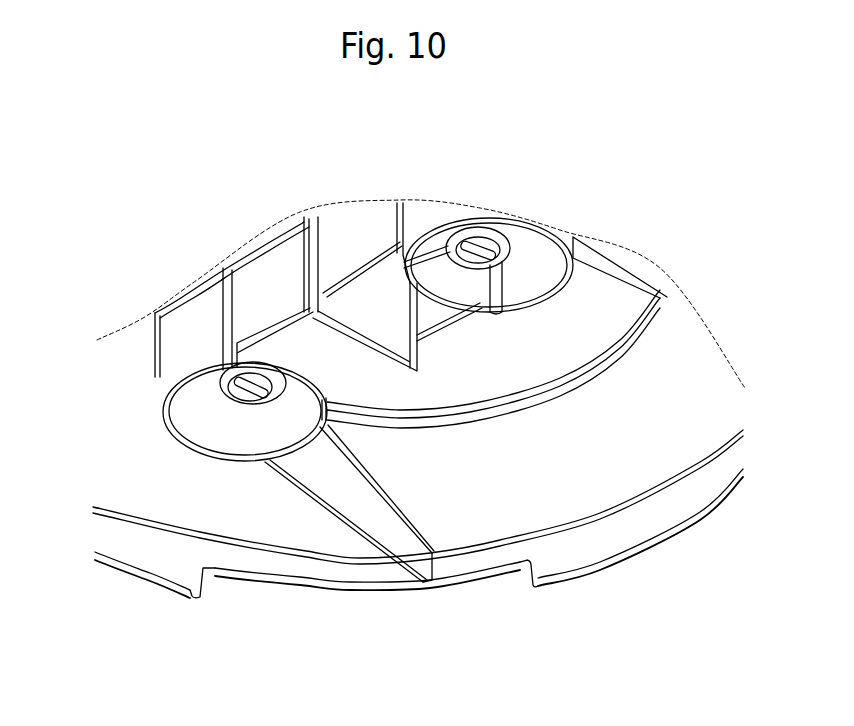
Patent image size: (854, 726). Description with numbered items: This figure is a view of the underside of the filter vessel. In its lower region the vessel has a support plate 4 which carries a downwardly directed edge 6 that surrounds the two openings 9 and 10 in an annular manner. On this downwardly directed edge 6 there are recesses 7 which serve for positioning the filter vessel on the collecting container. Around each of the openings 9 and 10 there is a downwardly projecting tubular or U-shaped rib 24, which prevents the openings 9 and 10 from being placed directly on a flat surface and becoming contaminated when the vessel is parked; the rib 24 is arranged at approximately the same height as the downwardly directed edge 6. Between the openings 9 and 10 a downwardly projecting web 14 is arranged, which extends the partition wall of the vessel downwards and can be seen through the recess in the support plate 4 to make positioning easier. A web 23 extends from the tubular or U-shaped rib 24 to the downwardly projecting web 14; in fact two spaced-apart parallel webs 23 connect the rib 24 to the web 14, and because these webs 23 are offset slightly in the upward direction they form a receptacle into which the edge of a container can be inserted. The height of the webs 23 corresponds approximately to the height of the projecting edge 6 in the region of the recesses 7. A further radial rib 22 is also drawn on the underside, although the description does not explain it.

The support plate 4 is at (605, 458).
The downwardly directed edge 6 is at (127, 548).
The recesses 7 is at (233, 590).
The opening 9 is at (215, 380).
The opening 10 is at (483, 243).
The downwardly projecting web 14 is at (355, 322).
The radial rib 22 is at (387, 525).
The web 23 is at (273, 315).
The tubular or U-shaped rib 24 is at (418, 223).